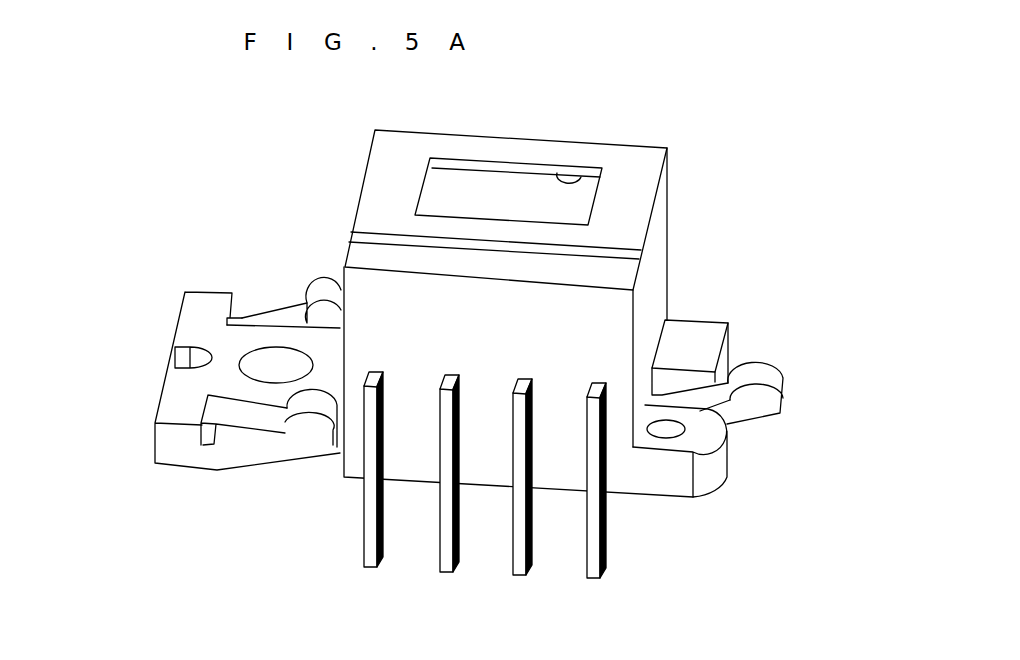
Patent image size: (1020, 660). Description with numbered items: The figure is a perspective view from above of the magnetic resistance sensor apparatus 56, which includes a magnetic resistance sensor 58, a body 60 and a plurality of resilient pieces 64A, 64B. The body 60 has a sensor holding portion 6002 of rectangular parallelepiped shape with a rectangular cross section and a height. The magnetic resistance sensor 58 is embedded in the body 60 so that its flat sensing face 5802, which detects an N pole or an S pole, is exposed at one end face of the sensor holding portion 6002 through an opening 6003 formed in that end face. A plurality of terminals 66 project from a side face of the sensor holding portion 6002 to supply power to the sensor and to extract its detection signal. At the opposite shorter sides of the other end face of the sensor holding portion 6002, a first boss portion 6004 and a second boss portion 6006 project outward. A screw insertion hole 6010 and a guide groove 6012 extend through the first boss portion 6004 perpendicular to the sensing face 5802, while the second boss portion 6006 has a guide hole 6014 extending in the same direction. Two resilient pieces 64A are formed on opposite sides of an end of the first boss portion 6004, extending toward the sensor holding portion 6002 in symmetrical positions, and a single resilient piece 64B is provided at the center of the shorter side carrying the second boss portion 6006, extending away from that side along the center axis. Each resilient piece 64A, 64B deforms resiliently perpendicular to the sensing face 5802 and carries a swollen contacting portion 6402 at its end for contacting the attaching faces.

The magnetic resistance sensor apparatus 56 is at (458, 339).
The magnetic resistance sensor 58 is at (507, 183).
The sensing face 5802 is at (452, 177).
The body 60 is at (673, 203).
The sensor holding portion 6002 is at (655, 263).
The opening 6003 is at (584, 176).
The first boss portion 6004 is at (203, 383).
The second boss portion 6006 is at (720, 494).
The screw insertion hole 6010 is at (252, 350).
The guide groove 6012 is at (183, 345).
The guide hole 6014 is at (728, 437).
The resilient piece 64A is at (292, 300).
The resilient piece 64B is at (753, 420).
The contacting portion 6402 is at (328, 292).
The terminals 66 is at (604, 548).